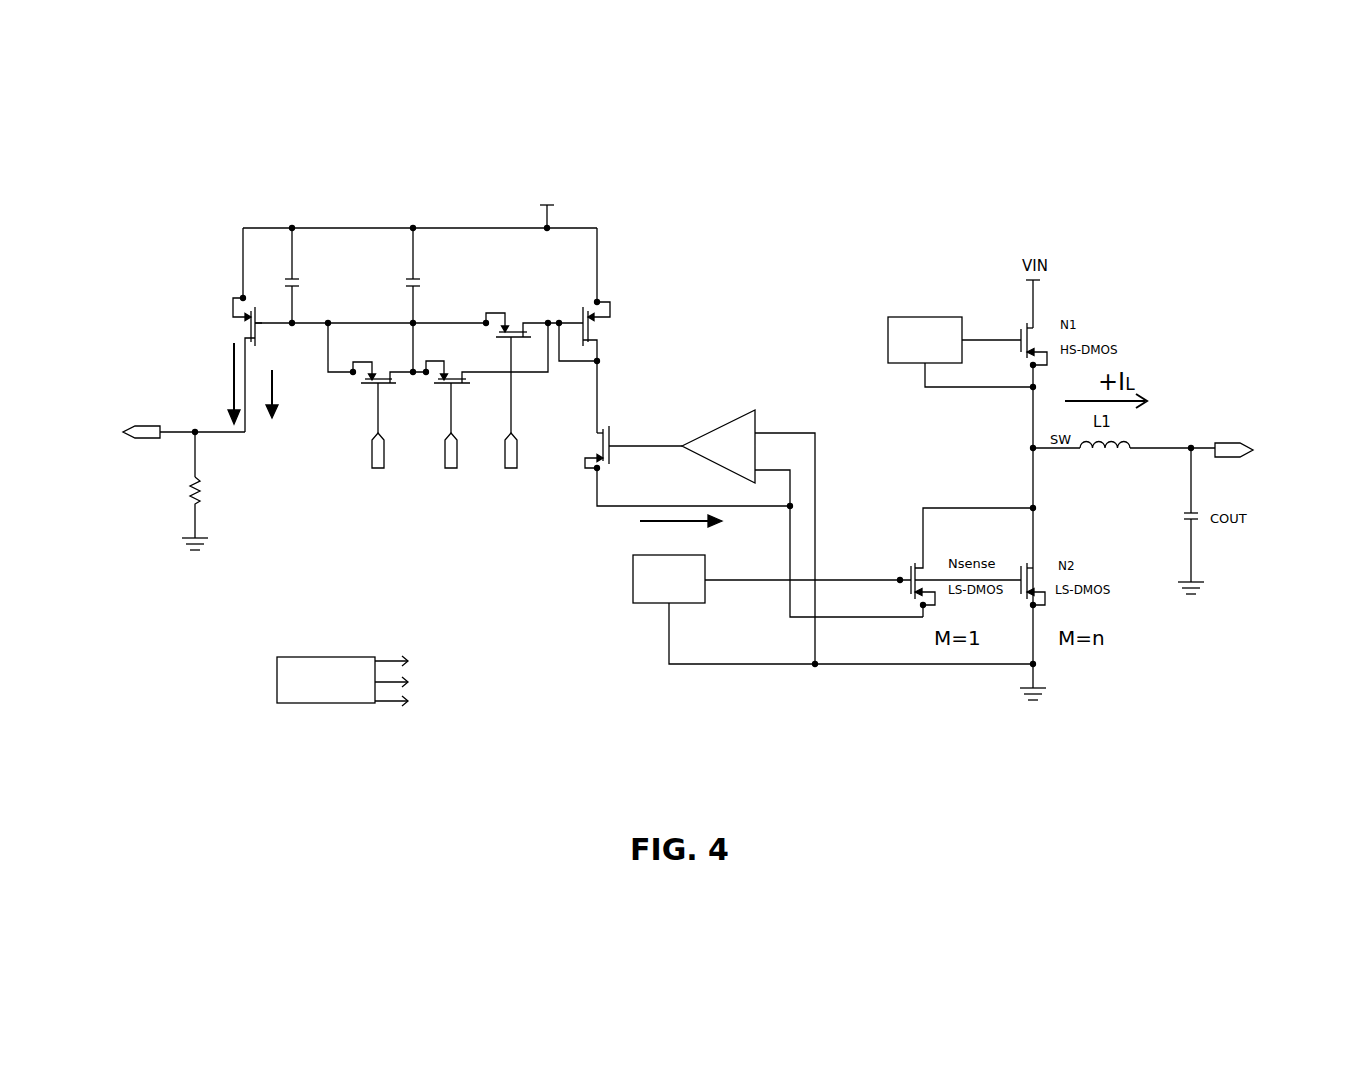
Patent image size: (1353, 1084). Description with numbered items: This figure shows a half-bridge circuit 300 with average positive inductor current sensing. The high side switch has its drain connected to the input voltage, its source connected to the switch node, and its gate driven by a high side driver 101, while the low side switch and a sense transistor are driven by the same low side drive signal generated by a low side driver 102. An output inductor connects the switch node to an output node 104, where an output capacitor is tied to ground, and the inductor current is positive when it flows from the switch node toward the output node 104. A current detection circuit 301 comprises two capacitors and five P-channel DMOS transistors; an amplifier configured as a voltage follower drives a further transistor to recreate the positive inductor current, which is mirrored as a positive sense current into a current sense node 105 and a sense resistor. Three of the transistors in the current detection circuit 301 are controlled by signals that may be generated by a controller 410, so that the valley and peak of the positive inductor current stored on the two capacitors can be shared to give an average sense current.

The half-bridge circuit 300 is at (190, 196).
The current detection circuit 301 is at (648, 259).
The high side driver 101 is at (893, 316).
The low side driver 102 is at (633, 580).
The output node 104 is at (1238, 443).
The current sense node 105 is at (133, 425).
The controller 410 is at (358, 682).